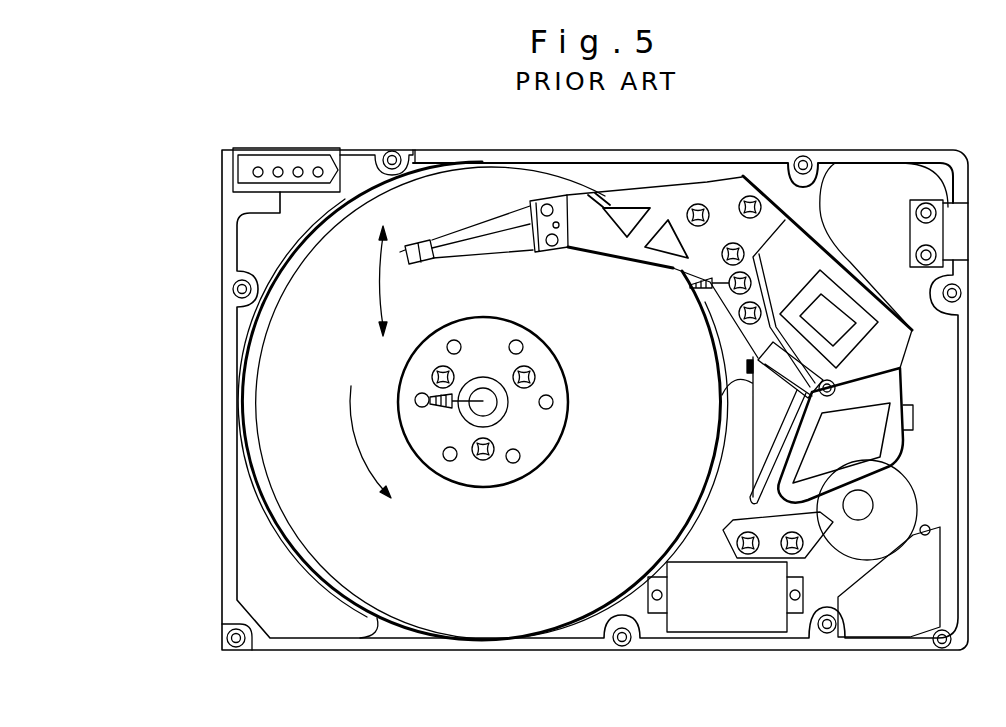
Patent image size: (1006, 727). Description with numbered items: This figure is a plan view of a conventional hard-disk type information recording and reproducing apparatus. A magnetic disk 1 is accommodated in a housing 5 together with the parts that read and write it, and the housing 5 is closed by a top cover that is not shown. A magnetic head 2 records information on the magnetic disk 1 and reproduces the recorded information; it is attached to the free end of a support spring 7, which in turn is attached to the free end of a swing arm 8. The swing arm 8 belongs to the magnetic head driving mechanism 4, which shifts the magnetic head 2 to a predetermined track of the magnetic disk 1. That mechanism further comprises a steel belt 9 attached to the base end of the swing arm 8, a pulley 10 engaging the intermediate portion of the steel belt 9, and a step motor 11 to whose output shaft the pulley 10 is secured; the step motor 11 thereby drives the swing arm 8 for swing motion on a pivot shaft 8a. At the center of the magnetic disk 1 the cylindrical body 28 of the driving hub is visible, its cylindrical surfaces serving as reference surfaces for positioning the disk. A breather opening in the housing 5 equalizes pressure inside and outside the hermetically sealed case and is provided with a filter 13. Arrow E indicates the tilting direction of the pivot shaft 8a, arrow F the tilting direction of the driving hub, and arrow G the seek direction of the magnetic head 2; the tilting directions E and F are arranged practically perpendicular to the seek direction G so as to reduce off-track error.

The magnetic disk 1 is at (245, 463).
The magnetic head 2 is at (425, 265).
The magnetic head driving mechanism 4 is at (937, 392).
The housing 5 is at (612, 164).
The support spring 7 is at (482, 232).
The swing arm 8 is at (723, 180).
The pivot shaft 8a is at (738, 296).
The steel belt 9 is at (752, 455).
The pulley 10 is at (870, 505).
The step motor 11 is at (905, 510).
The filter 13 is at (728, 628).
The cylindrical body 28 is at (540, 342).
The tilting direction of the pivot shaft E is at (722, 288).
The tilting direction of the driving hub F is at (462, 411).
The seek direction of the magnetic heads G is at (374, 283).